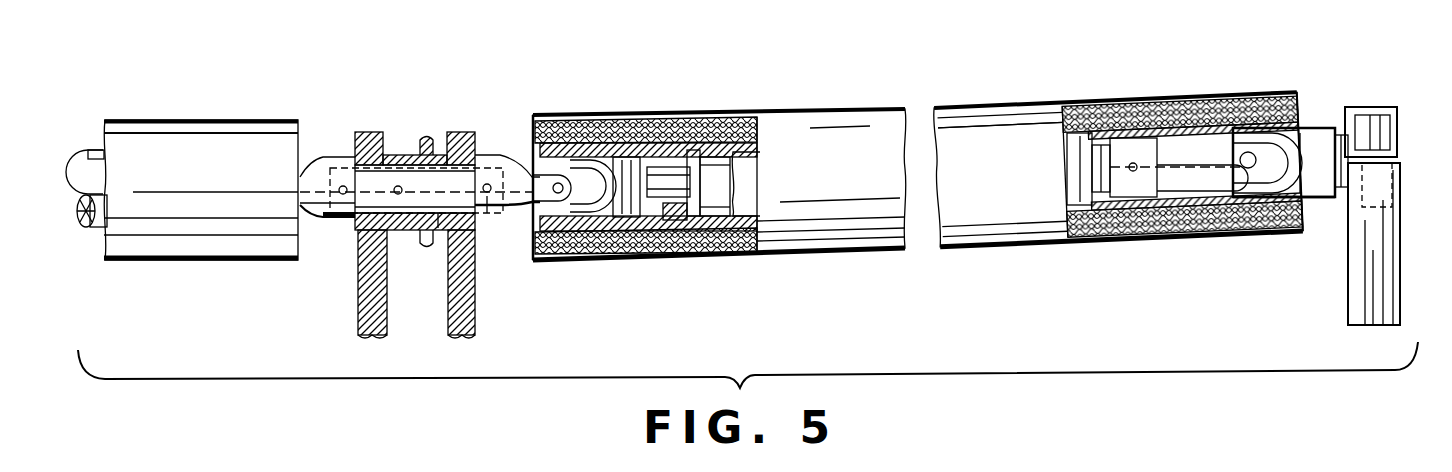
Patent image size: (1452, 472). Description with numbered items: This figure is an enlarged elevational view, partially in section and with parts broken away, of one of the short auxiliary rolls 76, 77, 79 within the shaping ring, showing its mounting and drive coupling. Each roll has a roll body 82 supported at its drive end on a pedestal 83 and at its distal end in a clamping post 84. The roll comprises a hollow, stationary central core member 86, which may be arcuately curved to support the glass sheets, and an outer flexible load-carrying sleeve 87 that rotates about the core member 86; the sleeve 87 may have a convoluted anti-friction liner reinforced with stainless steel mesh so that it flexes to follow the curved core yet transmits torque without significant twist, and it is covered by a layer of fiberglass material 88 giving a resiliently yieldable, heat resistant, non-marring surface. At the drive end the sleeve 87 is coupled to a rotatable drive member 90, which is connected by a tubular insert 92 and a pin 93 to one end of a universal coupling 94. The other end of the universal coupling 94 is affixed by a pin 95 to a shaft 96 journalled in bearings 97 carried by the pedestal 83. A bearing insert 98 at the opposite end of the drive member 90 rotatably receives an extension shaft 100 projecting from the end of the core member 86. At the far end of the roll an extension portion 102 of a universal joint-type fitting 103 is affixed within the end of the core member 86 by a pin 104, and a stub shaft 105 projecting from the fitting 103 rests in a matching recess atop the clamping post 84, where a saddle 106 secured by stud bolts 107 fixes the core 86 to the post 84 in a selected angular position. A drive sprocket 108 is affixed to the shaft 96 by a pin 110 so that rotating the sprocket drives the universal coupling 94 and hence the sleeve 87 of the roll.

The auxiliary roll 76 is at (230, 137).
The auxiliary roll 77 is at (995, 120).
The auxiliary roll 79 is at (1000, 124).
The roll body 82 is at (155, 114).
The pedestal 83 is at (362, 297).
The clamping post 84 is at (1362, 297).
The central core member 86 is at (93, 157).
The outer flexible load-carrying sleeve 87 is at (1308, 130).
The layer of fiberglass material 88 is at (1243, 93).
The rotatable drive member 90 is at (532, 140).
The tubular insert 92 is at (630, 165).
The pin 93 is at (615, 157).
The universal coupling 94 is at (323, 221).
The pin 95 is at (488, 197).
The shaft 96 is at (438, 228).
The bearings 97 is at (358, 150).
The bearing insert 98 is at (677, 152).
The extension shaft 100 is at (658, 207).
The extension portion 102 is at (1143, 147).
The universal joint-type fitting 103 is at (1315, 200).
The pin 104 is at (1132, 173).
The stub shaft 105 is at (1340, 134).
The saddle 106 is at (1387, 107).
The stud bolts 107 is at (1380, 193).
The drive sprocket 108 is at (405, 155).
The pin 110 is at (400, 196).